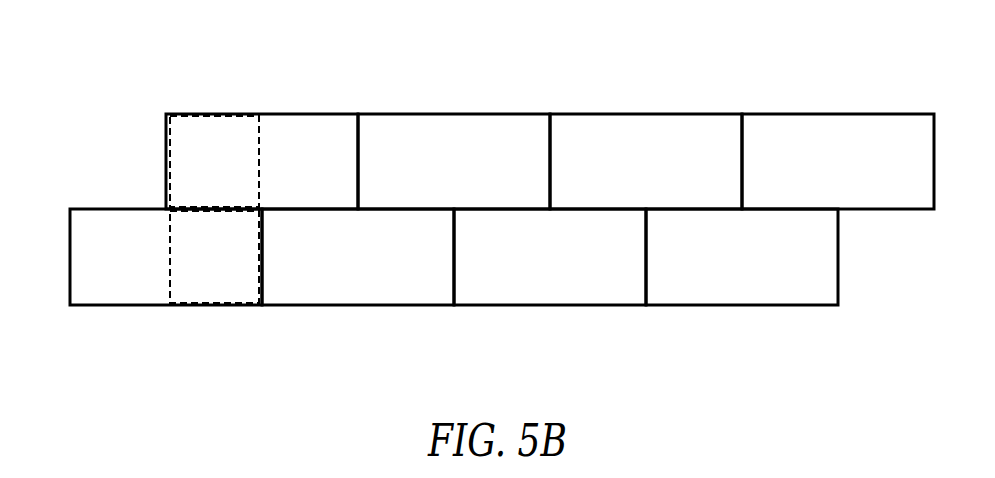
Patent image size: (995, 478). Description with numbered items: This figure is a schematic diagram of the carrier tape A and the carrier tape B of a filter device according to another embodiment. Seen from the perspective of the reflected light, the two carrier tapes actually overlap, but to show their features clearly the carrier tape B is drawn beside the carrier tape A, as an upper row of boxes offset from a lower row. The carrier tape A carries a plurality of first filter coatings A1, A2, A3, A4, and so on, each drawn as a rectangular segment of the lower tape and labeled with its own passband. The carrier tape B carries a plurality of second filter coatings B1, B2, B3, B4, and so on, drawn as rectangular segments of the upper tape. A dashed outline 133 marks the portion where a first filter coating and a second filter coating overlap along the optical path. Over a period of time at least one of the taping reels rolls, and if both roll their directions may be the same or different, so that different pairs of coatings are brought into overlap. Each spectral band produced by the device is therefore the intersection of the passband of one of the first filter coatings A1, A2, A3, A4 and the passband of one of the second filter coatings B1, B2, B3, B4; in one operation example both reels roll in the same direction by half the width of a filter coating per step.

The overlap region of adjacent sub-pixel areas 133 is at (206, 114).
The first filter coating A1 is at (113, 305).
The first filter coating A2 is at (362, 305).
The first filter coating A3 is at (547, 305).
The first filter coating A4 is at (745, 305).
The second filter coating B1 is at (309, 114).
The second filter coating B2 is at (458, 114).
The second filter coating B3 is at (645, 114).
The second filter coating B4 is at (835, 114).